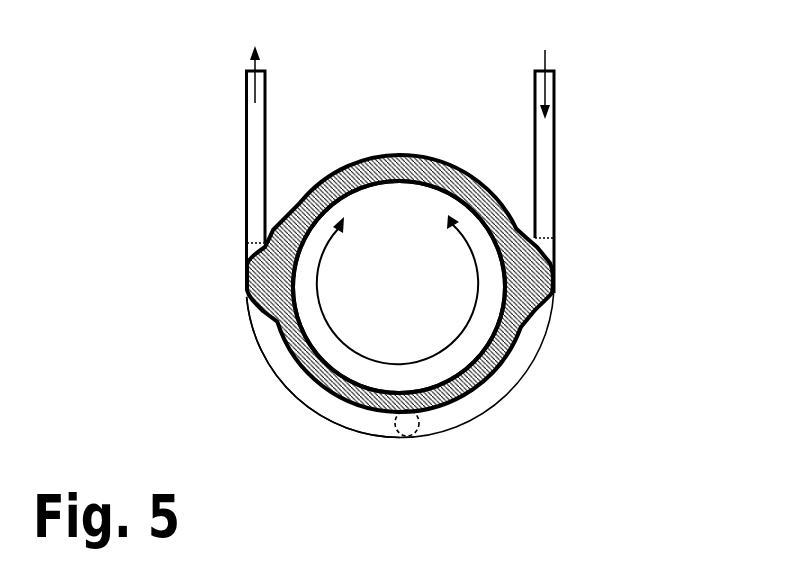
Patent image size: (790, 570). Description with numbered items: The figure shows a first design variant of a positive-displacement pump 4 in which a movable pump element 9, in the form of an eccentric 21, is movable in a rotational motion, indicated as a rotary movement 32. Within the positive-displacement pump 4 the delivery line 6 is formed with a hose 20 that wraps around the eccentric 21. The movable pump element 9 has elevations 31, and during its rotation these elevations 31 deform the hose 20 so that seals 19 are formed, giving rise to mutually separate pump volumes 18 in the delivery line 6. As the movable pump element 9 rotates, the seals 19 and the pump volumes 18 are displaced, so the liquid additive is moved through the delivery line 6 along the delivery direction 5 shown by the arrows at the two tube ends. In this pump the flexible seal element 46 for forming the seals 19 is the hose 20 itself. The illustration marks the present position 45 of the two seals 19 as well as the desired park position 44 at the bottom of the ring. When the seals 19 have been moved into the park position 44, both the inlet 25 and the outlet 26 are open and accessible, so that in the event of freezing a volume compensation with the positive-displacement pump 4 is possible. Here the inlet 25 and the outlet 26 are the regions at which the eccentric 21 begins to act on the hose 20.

The positive-displacement pump 4 is at (622, 160).
The delivery direction 5 is at (255, 70).
The delivery line 6 is at (555, 118).
The movable pump element 9 is at (482, 323).
The pump volumes 18 is at (530, 347).
The seals 19 is at (247, 278).
The hose 20 is at (555, 197).
The eccentric 21 is at (472, 176).
The inlet 25 is at (555, 232).
The outlet 26 is at (247, 243).
The elevations 31 is at (255, 275).
The rotary movement 32 is at (433, 357).
The park position 44 is at (407, 437).
The present position 45 is at (247, 288).
The flexible seal element 46 is at (297, 397).